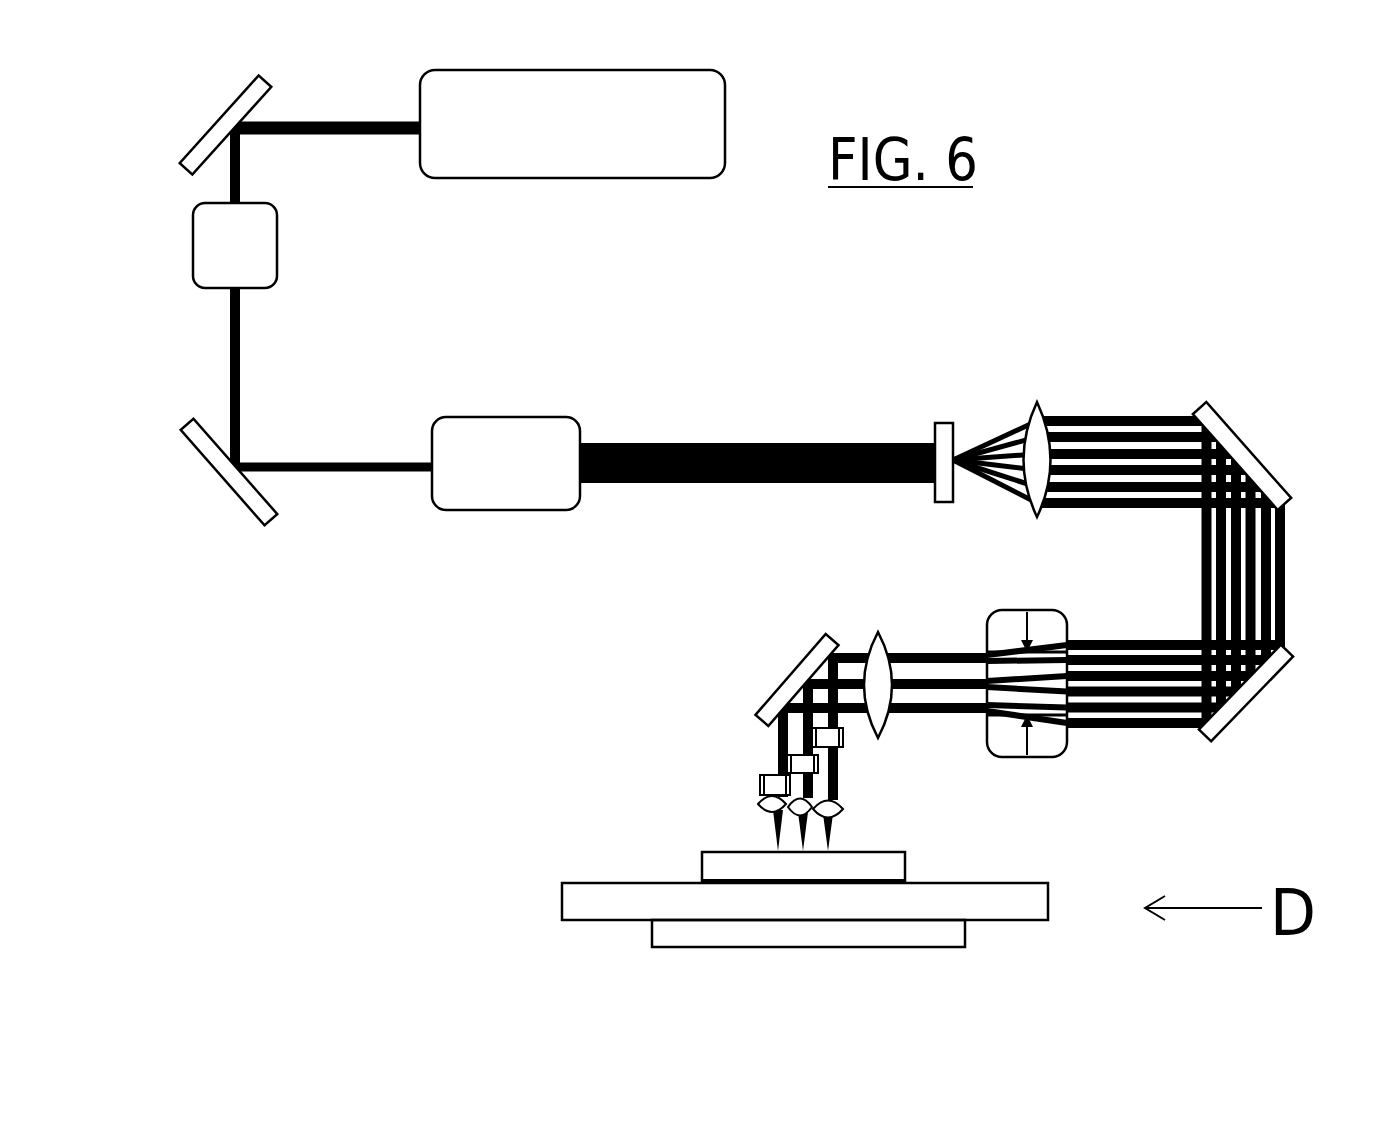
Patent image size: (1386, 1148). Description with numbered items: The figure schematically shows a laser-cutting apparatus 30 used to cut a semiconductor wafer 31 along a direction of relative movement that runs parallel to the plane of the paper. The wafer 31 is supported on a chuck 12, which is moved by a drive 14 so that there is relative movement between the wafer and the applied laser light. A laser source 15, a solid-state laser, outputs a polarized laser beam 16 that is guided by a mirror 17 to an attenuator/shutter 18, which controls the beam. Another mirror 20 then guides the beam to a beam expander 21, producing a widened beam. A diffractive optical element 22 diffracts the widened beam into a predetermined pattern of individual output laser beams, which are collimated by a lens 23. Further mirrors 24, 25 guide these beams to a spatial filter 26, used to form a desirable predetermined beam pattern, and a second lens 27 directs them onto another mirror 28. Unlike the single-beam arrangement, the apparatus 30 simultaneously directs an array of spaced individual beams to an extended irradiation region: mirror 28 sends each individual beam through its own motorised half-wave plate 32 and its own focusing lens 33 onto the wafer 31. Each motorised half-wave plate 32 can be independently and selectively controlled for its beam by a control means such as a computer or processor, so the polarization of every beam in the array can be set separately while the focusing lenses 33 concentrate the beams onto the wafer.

The chuck 12 is at (560, 905).
The drive 14 is at (937, 933).
The laser source 15 is at (572, 124).
The laser beam 16 is at (373, 134).
The mirror 17 is at (270, 90).
The attenuator/shutter 18 is at (277, 270).
The mirror 20 is at (232, 488).
The beam expander 21 is at (515, 422).
The diffractive optical element 22 is at (947, 420).
The lens 23 is at (1037, 420).
The mirror 24 is at (1220, 405).
The mirror 25 is at (1237, 715).
The spatial filter 26 is at (1062, 755).
The second lens 27 is at (878, 632).
The mirror 28 is at (812, 652).
The laser-cutting apparatus 30 is at (1027, 252).
The semiconductor wafer 31 is at (703, 862).
The motorised half-wave plates 32 is at (810, 734).
The focusing lenses 33 is at (786, 812).